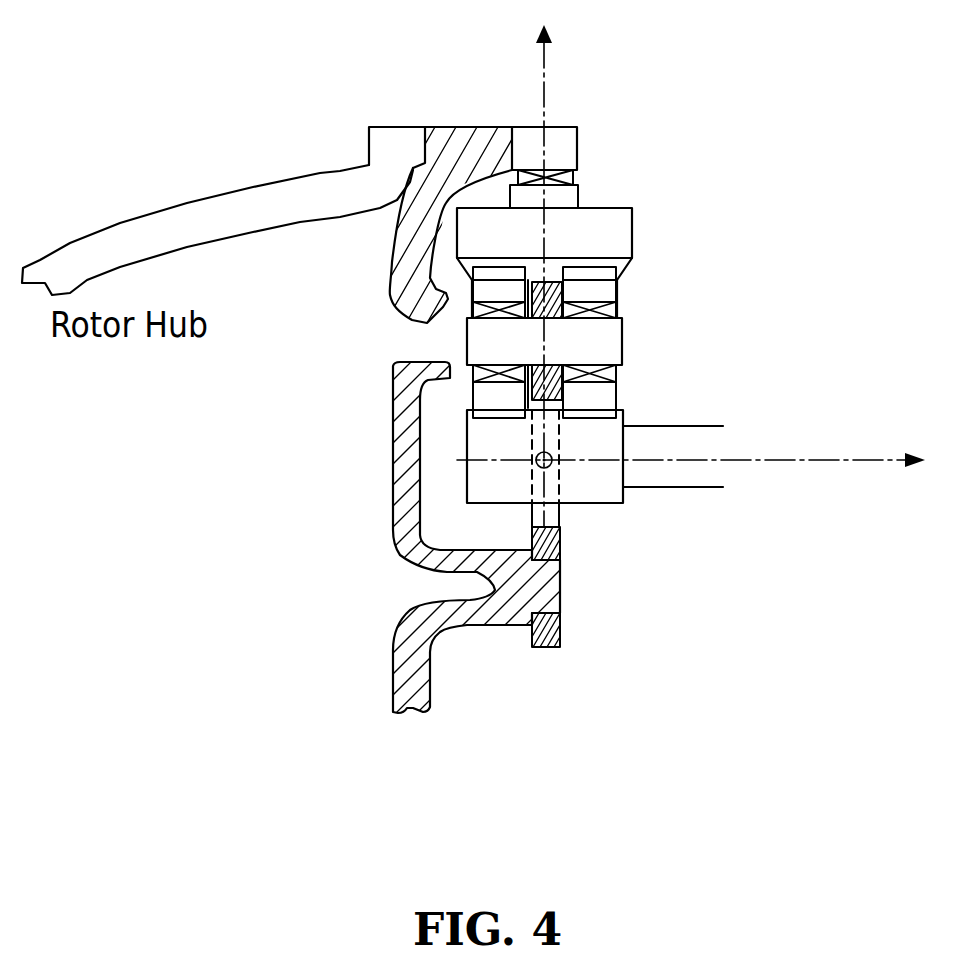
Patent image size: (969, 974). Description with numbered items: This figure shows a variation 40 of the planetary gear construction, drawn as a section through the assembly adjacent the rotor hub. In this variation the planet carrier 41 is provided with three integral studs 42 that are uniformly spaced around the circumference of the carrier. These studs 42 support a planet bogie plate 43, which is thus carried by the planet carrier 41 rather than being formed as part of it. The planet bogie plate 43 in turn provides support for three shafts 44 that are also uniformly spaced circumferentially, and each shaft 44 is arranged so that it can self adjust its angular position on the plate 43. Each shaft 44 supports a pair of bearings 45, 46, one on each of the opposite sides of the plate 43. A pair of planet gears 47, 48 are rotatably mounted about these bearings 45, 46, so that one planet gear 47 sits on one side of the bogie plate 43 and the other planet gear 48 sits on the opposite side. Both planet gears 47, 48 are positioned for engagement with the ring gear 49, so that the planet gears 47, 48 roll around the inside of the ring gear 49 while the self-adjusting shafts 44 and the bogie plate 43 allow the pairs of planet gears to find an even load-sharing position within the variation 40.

The variation 40 is at (672, 190).
The planet carrier 41 is at (390, 258).
The studs 42 is at (553, 572).
The planet bogie plate 43 is at (553, 628).
The shafts 44 is at (612, 345).
The bearing 45 is at (615, 307).
The bearing 46 is at (470, 376).
The planet gear 47 is at (610, 287).
The planet gear 48 is at (483, 295).
The ring gear 49 is at (617, 233).